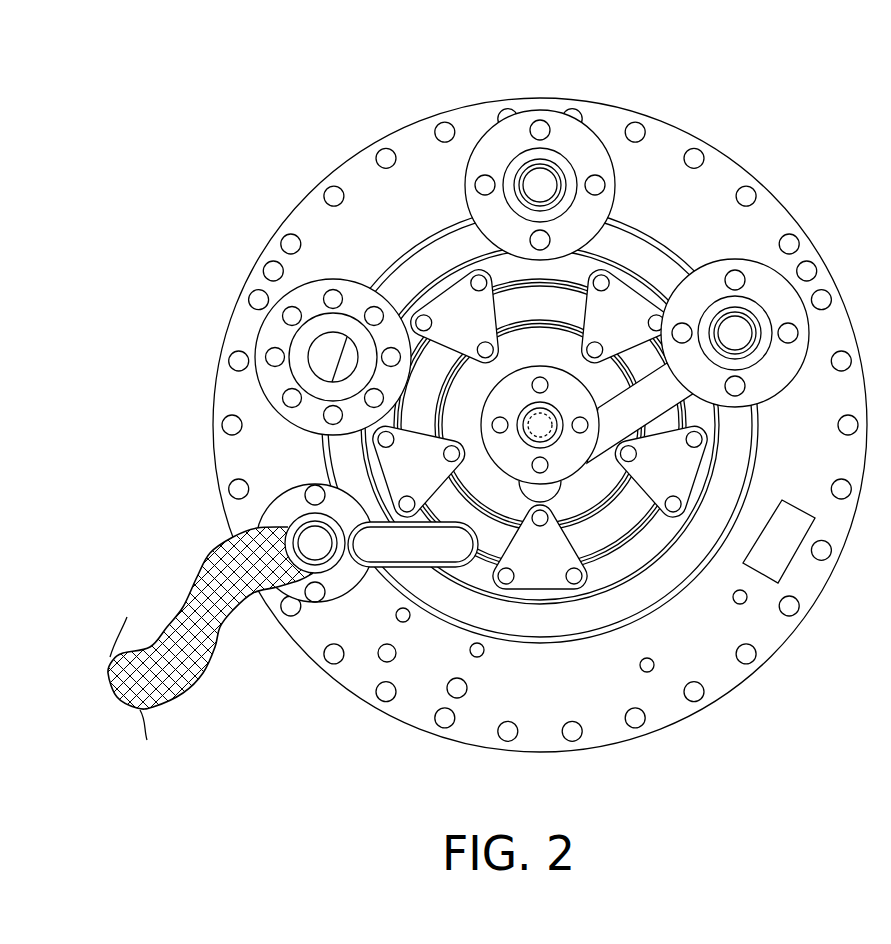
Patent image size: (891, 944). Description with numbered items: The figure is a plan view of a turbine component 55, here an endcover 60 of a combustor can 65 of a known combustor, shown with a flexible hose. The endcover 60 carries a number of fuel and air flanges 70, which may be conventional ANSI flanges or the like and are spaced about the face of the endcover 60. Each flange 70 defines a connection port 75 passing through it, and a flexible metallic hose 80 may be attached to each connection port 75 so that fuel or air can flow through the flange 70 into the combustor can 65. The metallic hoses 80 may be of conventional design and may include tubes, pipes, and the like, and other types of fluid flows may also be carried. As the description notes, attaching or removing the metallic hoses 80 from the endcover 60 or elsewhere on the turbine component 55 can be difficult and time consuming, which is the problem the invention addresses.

The turbine component 55 is at (485, 389).
The endcover 60 is at (533, 425).
The combustor can 65 is at (533, 425).
The fuel and air flange 70 is at (667, 232).
The connection port 75 is at (628, 146).
The flexible metallic hose 80 is at (215, 627).